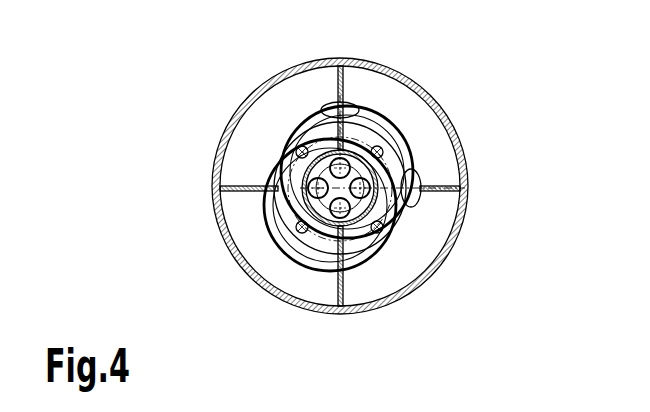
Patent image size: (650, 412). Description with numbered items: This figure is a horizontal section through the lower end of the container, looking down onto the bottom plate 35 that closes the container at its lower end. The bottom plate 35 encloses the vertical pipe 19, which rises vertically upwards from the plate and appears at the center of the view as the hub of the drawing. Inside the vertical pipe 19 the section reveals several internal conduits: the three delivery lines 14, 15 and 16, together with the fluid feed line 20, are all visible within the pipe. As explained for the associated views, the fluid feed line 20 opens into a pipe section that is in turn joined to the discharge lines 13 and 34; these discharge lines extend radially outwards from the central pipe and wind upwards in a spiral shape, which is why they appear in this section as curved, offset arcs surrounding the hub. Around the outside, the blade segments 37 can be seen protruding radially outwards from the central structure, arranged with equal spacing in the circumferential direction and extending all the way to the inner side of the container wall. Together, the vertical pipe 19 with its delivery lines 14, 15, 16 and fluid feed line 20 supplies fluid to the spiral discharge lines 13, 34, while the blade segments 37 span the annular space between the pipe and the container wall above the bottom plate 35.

The discharge line 13 is at (362, 268).
The delivery line 14 is at (305, 198).
The delivery line 15 is at (380, 135).
The delivery line 16 is at (415, 212).
The vertical pipe 19 is at (377, 248).
The fluid feed line 20 is at (290, 180).
The discharge line 34 is at (398, 120).
The bottom plate 35 is at (325, 172).
The blade segment 37 is at (371, 60).